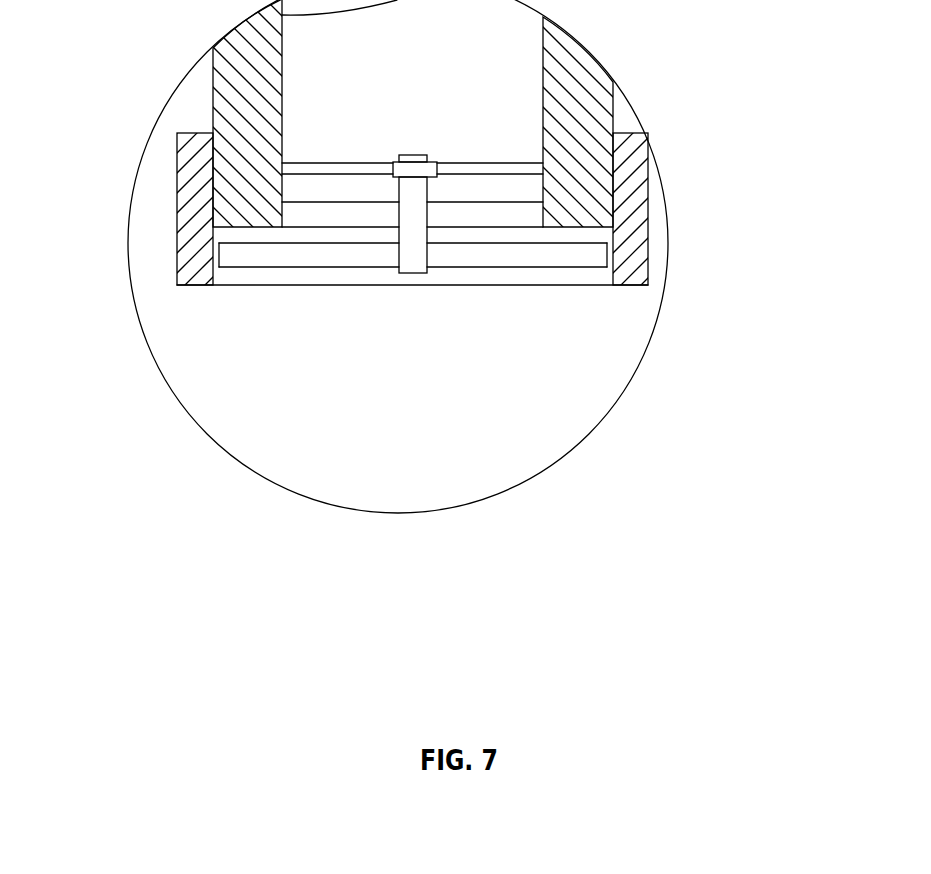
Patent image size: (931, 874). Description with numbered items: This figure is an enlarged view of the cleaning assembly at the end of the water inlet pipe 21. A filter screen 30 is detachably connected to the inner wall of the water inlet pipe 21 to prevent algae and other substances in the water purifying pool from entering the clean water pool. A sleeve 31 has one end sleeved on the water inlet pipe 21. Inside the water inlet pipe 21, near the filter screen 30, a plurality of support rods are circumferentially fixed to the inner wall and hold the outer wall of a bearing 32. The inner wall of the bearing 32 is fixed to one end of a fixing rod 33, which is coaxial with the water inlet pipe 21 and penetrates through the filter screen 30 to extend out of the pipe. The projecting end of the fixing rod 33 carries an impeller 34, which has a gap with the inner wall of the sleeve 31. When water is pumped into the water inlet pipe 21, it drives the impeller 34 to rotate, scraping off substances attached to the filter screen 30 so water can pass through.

The water inlet pipe 21 is at (618, 155).
The filter screen 30 is at (324, 155).
The sleeve 31 is at (250, 155).
The bearing 32 is at (614, 106).
The fixing rod 33 is at (598, 264).
The impeller 34 is at (322, 289).